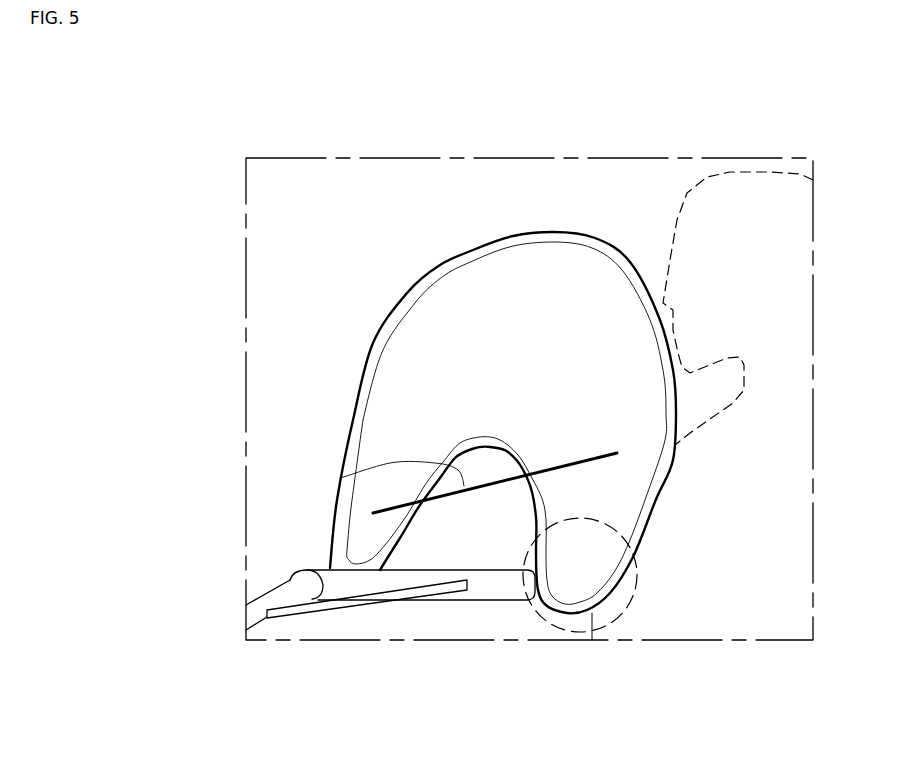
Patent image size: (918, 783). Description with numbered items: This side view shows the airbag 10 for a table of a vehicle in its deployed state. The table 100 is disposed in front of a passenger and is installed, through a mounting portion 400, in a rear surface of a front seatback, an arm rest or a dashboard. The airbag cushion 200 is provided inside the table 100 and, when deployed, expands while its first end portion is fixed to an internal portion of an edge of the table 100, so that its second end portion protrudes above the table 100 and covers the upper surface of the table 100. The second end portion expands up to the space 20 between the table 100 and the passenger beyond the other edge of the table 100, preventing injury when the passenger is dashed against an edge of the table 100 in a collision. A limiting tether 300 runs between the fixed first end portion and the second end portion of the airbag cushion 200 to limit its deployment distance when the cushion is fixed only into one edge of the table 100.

The airbag for a table of a vehicle 10 is at (231, 140).
The space 20 is at (538, 612).
The table 100 is at (350, 583).
The airbag cushion 200 is at (549, 232).
The limiting tether 300 is at (360, 474).
The mounting portion 400 is at (273, 600).